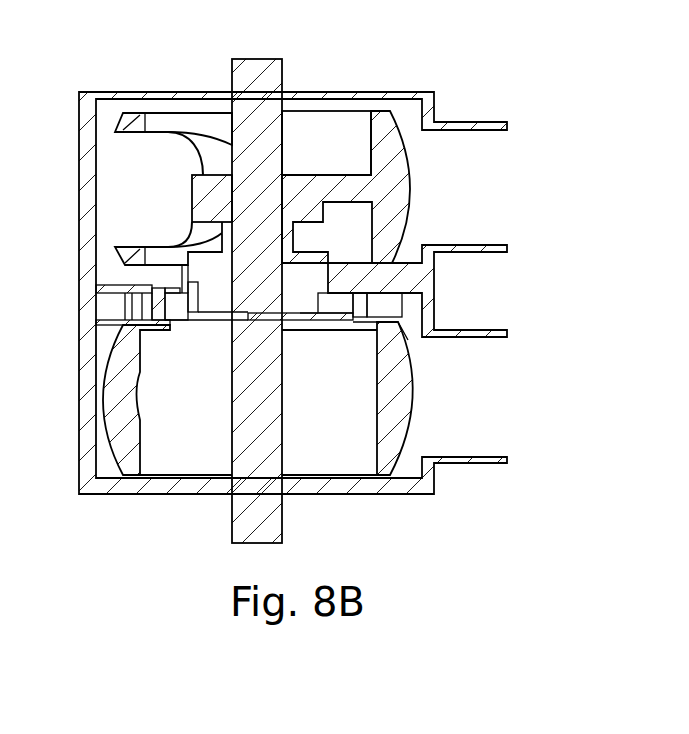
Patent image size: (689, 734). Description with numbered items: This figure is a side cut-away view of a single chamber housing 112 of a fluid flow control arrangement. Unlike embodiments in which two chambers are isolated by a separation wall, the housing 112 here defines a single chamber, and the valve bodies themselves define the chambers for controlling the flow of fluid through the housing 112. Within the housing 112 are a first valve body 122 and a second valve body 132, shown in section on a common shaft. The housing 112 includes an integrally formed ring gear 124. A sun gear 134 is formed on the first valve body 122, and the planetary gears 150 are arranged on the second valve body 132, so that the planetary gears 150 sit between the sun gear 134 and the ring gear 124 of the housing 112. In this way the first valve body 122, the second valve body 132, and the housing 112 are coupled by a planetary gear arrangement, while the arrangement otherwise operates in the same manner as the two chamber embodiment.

The housing 112 is at (410, 280).
The first valve body 122 is at (391, 174).
The ring gear 124 is at (412, 310).
The second valve body 132 is at (388, 435).
The sun gear 134 is at (252, 298).
The planetary gears 150 is at (385, 307).